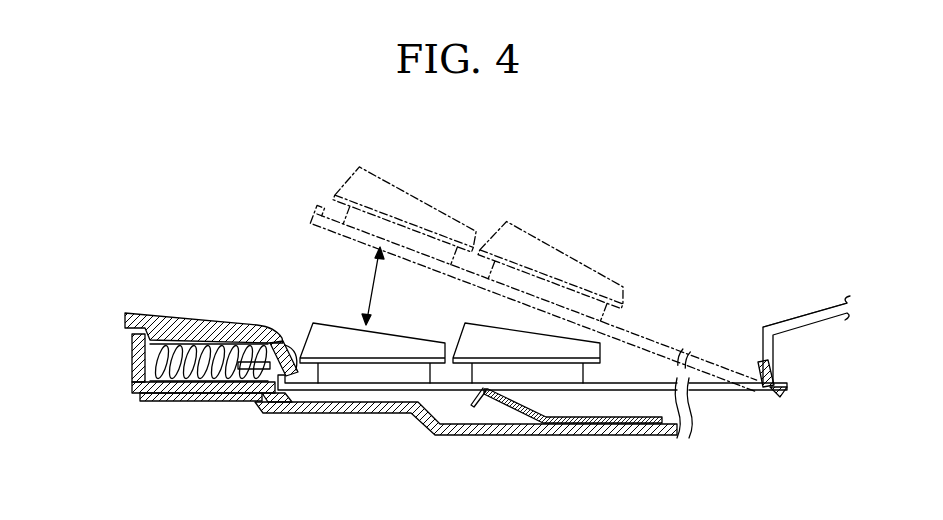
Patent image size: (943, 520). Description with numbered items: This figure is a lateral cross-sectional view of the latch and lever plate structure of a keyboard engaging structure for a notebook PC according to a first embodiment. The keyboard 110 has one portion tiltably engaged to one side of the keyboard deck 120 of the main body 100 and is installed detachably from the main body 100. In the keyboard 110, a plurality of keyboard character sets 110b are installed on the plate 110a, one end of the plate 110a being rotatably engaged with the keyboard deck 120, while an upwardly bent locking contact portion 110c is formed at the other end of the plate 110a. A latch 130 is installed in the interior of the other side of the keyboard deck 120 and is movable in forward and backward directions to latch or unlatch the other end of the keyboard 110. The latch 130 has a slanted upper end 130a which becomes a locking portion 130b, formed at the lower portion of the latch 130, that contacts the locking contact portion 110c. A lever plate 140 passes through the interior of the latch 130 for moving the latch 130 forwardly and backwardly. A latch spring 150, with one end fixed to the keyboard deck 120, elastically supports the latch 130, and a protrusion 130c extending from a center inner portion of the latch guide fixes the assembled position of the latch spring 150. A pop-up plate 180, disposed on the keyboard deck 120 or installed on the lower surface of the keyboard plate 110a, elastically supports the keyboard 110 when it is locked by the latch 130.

The main body 100 is at (813, 310).
The keyboard 110 is at (525, 221).
The plate 110a is at (649, 332).
The keyboard character sets 110b is at (556, 244).
The locking contact portion 110c is at (316, 207).
The keyboard deck 120 is at (168, 317).
The latch 130 is at (193, 366).
The slanted upper end 130a is at (293, 348).
The locking portion 130b is at (284, 402).
The protrusion 130c is at (250, 405).
The lever plate 140 is at (133, 350).
The latch spring 150 is at (222, 350).
The pop-up plate 180 is at (502, 410).